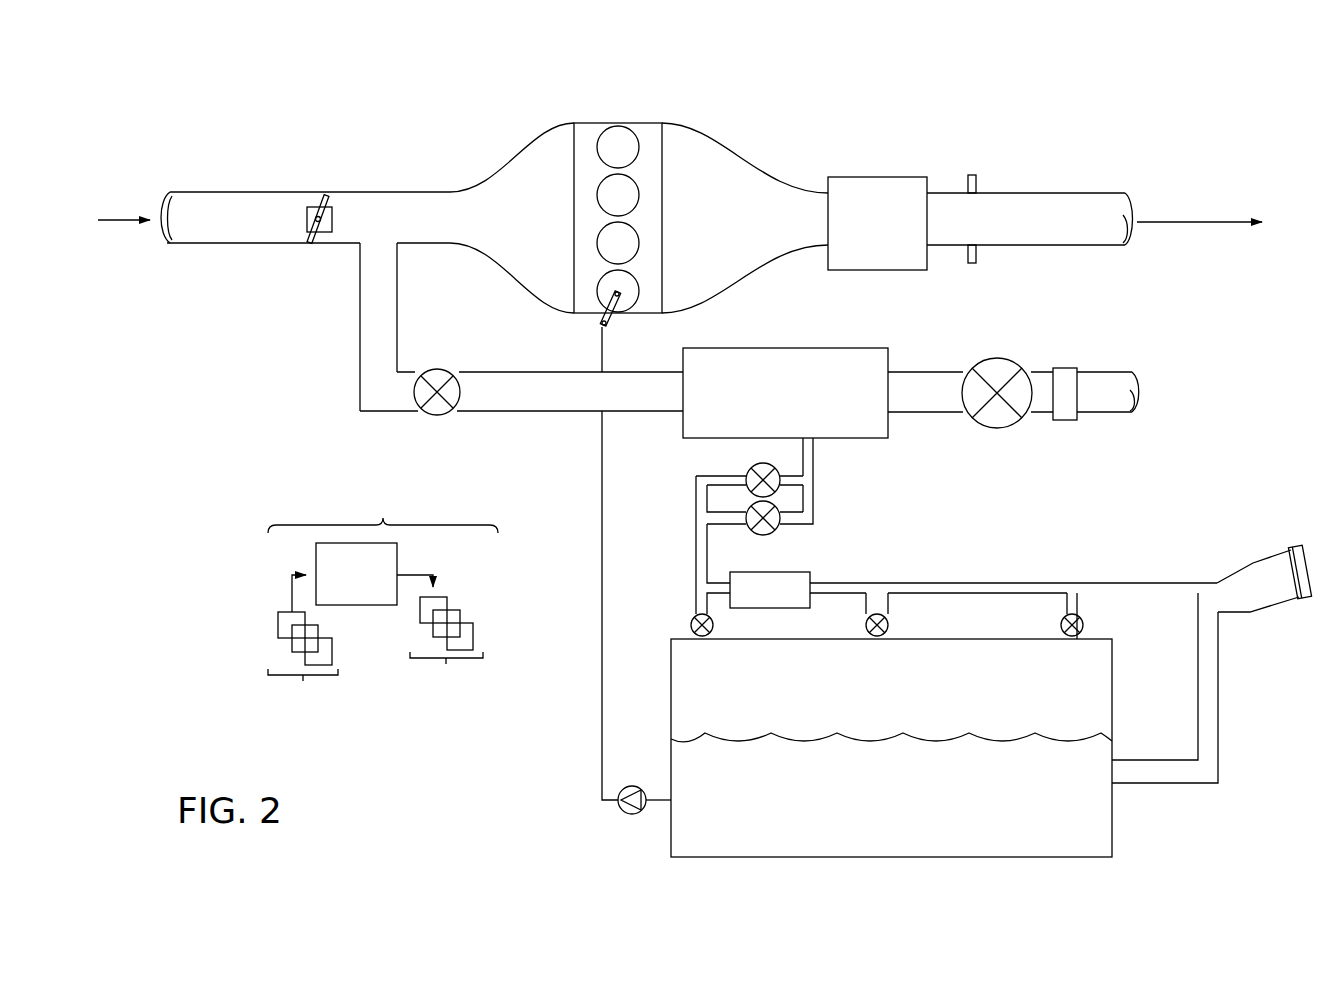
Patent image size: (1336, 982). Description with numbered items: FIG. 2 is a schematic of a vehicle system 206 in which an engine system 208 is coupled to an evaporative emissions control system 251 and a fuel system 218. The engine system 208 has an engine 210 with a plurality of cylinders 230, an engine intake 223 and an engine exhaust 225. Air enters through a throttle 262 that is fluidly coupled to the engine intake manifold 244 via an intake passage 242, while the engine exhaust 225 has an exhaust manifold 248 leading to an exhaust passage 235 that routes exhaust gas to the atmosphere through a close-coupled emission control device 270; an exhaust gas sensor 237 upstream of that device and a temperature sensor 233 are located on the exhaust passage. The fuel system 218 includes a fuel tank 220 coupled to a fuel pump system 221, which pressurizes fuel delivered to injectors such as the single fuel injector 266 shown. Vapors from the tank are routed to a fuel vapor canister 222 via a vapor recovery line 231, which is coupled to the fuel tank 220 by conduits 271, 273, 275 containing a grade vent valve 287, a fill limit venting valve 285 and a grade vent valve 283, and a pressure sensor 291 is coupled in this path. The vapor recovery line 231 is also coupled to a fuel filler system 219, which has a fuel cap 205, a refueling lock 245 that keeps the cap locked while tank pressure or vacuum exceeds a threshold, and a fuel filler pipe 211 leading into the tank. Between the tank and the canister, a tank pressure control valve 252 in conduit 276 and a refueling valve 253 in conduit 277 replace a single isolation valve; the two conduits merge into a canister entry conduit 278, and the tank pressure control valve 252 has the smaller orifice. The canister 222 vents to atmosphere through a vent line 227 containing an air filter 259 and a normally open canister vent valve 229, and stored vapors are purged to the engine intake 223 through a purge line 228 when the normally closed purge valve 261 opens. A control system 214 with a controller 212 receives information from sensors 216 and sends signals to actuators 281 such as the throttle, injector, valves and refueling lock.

The vehicle system 206 is at (178, 122).
The throttle 262 is at (332, 224).
The intake passage 242 is at (347, 248).
The engine intake 223 is at (504, 144).
The engine intake manifold 244 is at (541, 229).
The engine 210 is at (663, 200).
The cylinders 230 is at (637, 138).
The engine exhaust 225 is at (822, 128).
The exhaust manifold 248 is at (744, 229).
The emission control device 270 is at (867, 177).
The engine system 208 is at (941, 118).
The exhaust passage 235 is at (1082, 193).
The exhaust gas sensor 237 is at (968, 186).
The temperature sensor 233 is at (968, 251).
The fuel injector 266 is at (609, 318).
The purge line 228 is at (551, 402).
The purge valve 261 is at (438, 370).
The fuel vapor canister 222 is at (892, 368).
The vent line 227 is at (935, 402).
The canister vent valve 229 is at (993, 359).
The air filter 259 is at (1070, 368).
The emissions control system 251 is at (1150, 324).
The canister entry conduit 278 is at (813, 467).
The conduit 276 is at (797, 525).
The refueling valve 253 is at (750, 470).
The tank pressure control valve 252 is at (752, 533).
The conduit 277 is at (708, 474).
The pressure sensor 291 is at (810, 580).
The vapor recovery line 231 is at (1130, 582).
The conduit 271 is at (706, 599).
The grade vent valve 287 is at (691, 620).
The conduit 273 is at (870, 599).
The fill limit venting valve 285 is at (890, 623).
The conduit 275 is at (1062, 600).
The grade vent valve 283 is at (1097, 611).
The fuel system 218 is at (1157, 822).
The fuel tank 220 is at (1112, 728).
The fuel pump system 221 is at (640, 772).
The fuel filler pipe 211 is at (1220, 683).
The refueling lock 245 is at (1296, 598).
The fuel filler system 219 is at (1266, 542).
The fuel cap 205 is at (1295, 546).
The control system 214 is at (383, 505).
The controller 212 is at (362, 577).
The sensors 216 is at (303, 667).
The actuators 281 is at (446, 652).